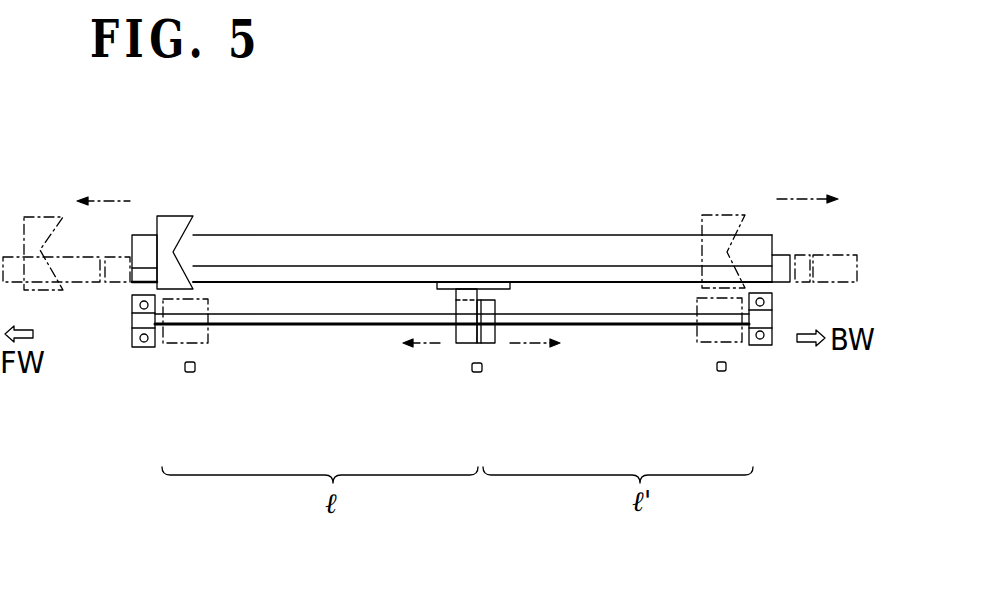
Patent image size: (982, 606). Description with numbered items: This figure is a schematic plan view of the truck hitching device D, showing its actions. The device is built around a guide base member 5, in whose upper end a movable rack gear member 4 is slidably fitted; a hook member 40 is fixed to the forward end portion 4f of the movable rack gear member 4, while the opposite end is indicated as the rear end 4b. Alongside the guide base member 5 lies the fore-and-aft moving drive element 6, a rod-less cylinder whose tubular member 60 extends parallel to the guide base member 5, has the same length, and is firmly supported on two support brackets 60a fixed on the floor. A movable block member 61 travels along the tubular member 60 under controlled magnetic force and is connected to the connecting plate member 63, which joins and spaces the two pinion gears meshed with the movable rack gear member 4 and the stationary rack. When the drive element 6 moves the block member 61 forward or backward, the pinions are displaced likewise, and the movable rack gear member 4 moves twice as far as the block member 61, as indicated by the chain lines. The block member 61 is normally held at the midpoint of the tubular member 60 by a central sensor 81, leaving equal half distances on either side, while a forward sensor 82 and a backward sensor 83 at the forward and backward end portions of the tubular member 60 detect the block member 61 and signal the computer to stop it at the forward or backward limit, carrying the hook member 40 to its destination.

The movable rack gear member 4 is at (320, 275).
The forward end portion 4f is at (143, 272).
The rear end of shaft 4b is at (782, 277).
The guide base member 5 is at (418, 243).
The fore-and-aft moving drive element 6 is at (388, 372).
The hook member 40 is at (52, 217).
The tubular member 60 is at (603, 320).
The support brackets 60a is at (132, 340).
The movable block member 61 is at (208, 338).
The connecting plate member 63 is at (437, 288).
The central sensor 81 is at (477, 372).
The forward sensor 82 is at (190, 372).
The backward sensor 83 is at (721, 371).
The truck hitching device D is at (540, 198).